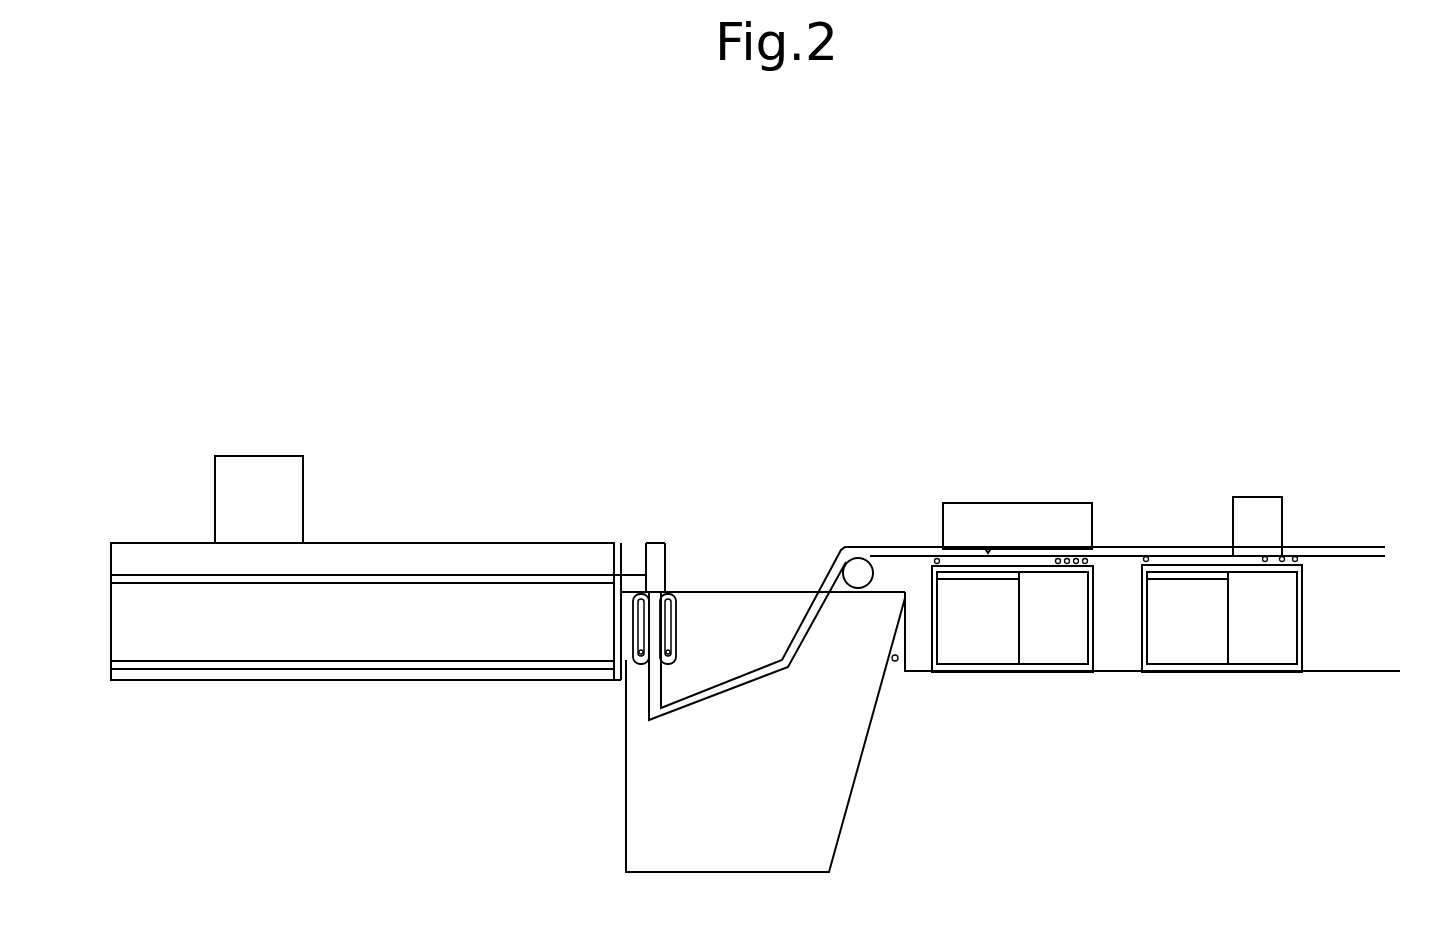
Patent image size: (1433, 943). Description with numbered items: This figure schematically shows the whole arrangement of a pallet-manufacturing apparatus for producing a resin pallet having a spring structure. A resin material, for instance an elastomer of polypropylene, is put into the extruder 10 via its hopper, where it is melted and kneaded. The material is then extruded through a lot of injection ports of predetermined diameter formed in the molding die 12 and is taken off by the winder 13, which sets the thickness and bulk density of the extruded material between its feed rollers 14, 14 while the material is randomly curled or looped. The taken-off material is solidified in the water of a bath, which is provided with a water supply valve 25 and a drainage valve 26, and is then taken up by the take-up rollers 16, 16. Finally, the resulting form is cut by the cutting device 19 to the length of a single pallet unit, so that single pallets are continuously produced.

The extruder 10 is at (537, 550).
The molding die 12 is at (660, 540).
The winder 13 is at (623, 668).
The feed rollers 14 is at (672, 594).
The take-up rollers 16 is at (1035, 541).
The cutting device 19 is at (1248, 505).
The water supply valve 25 is at (640, 662).
The drainage valve 26 is at (907, 672).